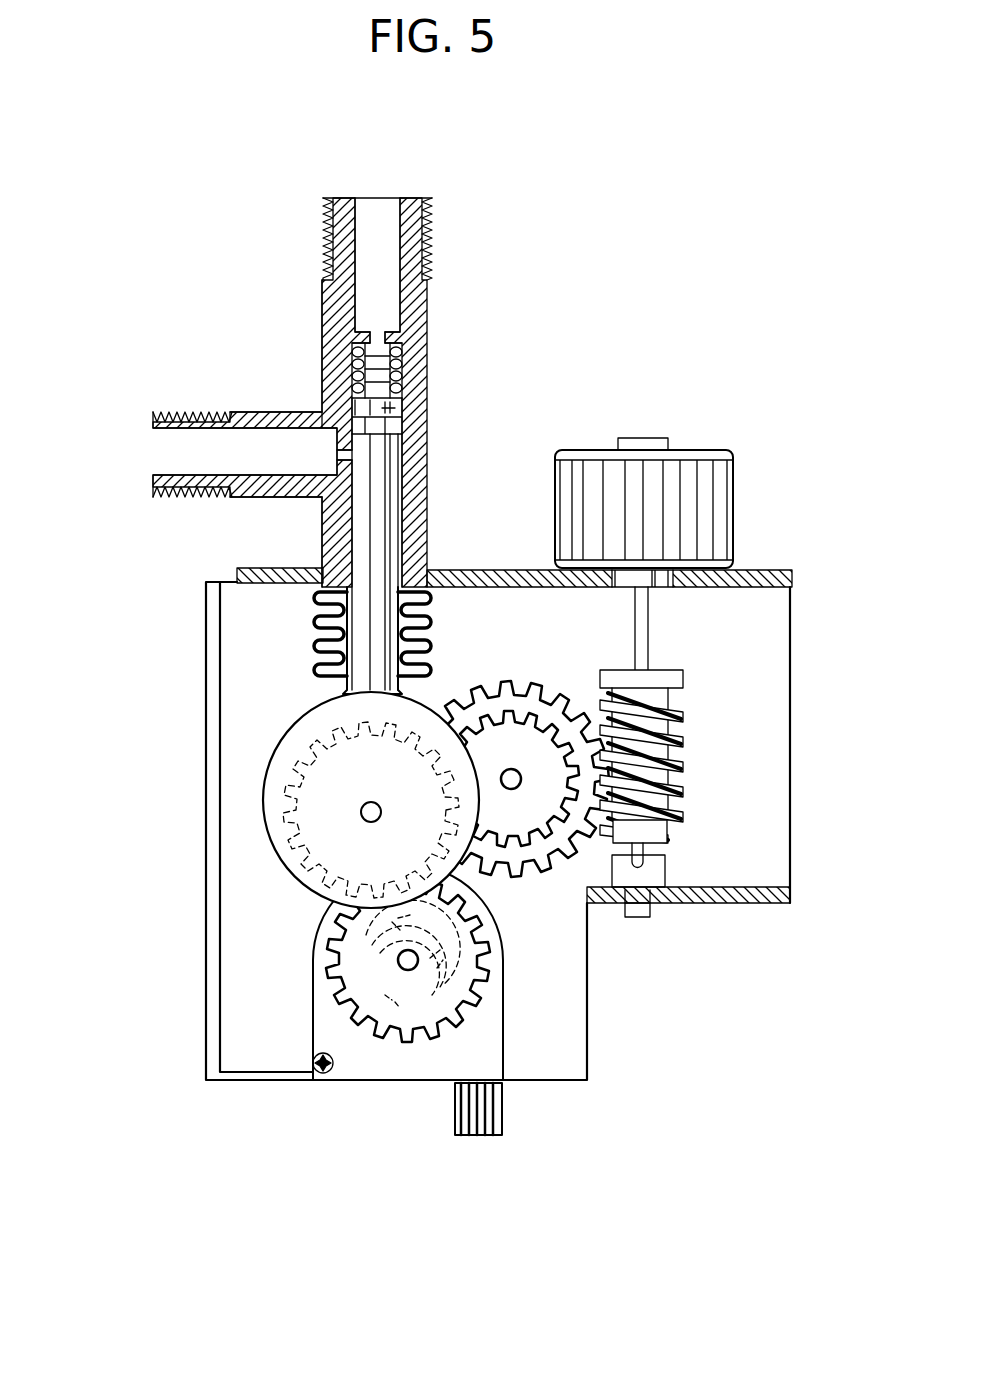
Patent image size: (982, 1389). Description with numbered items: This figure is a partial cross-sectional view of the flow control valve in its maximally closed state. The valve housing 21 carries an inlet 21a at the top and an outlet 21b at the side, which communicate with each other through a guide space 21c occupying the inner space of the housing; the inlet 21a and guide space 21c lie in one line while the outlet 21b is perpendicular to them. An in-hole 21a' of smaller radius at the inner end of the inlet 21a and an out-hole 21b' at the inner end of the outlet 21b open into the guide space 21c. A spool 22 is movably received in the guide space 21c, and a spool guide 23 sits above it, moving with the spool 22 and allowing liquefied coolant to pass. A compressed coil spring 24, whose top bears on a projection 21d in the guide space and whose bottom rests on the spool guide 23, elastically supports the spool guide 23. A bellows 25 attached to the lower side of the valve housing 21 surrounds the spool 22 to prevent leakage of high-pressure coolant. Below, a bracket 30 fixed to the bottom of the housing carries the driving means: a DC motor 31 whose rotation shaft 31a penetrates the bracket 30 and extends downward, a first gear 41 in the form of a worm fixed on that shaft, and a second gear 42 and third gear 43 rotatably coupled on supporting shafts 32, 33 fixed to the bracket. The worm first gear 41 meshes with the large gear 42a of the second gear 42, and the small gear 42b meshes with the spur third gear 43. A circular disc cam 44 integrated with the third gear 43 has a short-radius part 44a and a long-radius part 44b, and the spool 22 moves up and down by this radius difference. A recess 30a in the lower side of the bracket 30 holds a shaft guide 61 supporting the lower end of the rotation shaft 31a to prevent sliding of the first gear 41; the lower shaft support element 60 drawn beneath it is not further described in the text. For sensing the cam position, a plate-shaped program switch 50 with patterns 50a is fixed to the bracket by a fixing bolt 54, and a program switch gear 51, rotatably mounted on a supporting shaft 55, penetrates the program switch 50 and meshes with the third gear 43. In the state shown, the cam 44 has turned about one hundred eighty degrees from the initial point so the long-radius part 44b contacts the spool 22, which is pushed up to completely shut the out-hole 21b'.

The valve housing 21 is at (330, 285).
The inlet 21a is at (411, 225).
The in-hole 21a' is at (292, 313).
The outlet 21b is at (188, 454).
The out-hole 21b' is at (268, 416).
The guide space 21c is at (355, 358).
The projection 21d is at (400, 362).
The spool 22 is at (380, 500).
The spool guide 23 is at (400, 415).
The compressed coil spring 24 is at (405, 392).
The bellows 25 is at (313, 627).
The bracket 30 is at (728, 677).
The recess 30a is at (790, 895).
The DC motor 31 is at (630, 450).
The rotation shaft 31a is at (648, 627).
The supporting shaft 32 is at (511, 769).
The supporting shaft 33 is at (360, 808).
The first gear 41 is at (683, 820).
The second gear 42 is at (533, 847).
The large gear 42a is at (560, 880).
The small gear 42b is at (495, 880).
The third gear 43 is at (283, 793).
The circular disc cam 44 is at (272, 820).
The short-radius part 44a is at (317, 660).
The long-radius part 44b is at (325, 920).
The program switch 50 is at (417, 1062).
The patterns 50a is at (372, 995).
The program switch gear 51 is at (335, 1000).
The fixing bolt 54 is at (320, 1073).
The supporting shaft 55 is at (398, 962).
The pin 60 is at (640, 912).
The shaft guide 61 is at (655, 893).